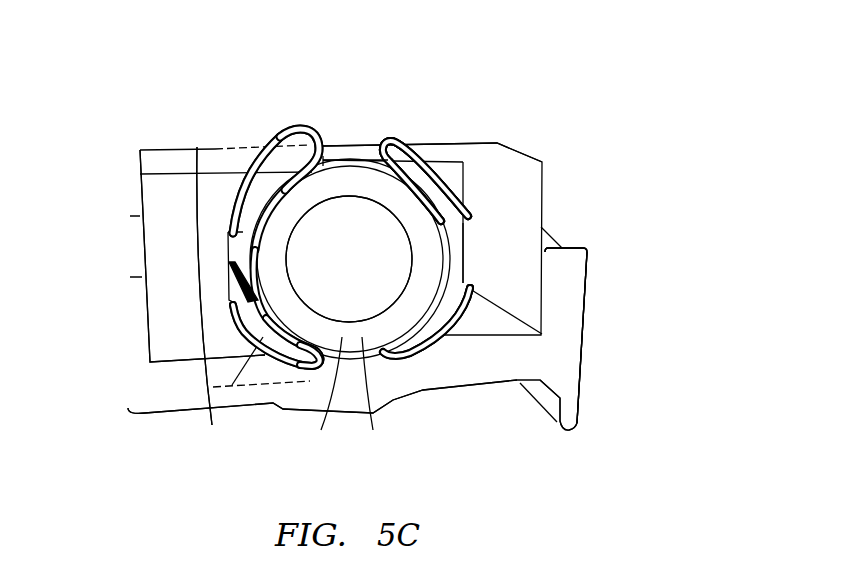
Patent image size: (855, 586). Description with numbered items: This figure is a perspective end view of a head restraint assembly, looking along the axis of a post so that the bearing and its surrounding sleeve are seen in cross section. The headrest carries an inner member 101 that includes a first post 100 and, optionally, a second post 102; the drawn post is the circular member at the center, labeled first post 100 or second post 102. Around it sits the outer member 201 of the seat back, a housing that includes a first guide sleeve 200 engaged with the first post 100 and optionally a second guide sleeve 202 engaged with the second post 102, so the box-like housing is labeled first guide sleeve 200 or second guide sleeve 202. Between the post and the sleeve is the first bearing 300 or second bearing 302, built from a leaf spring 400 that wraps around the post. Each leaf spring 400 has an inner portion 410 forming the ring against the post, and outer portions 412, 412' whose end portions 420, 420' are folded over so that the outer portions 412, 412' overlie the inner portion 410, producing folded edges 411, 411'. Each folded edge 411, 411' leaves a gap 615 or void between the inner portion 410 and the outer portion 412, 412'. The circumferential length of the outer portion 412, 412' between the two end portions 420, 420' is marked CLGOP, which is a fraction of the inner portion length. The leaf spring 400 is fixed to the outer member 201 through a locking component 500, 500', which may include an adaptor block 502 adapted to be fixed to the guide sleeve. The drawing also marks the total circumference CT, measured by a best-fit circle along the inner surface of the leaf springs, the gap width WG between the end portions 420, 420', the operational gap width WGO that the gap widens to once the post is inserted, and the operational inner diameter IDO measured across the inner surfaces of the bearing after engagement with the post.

The first post 100 is at (616, 404).
The inner member 101 is at (355, 402).
The second post 102 is at (374, 360).
The first guide sleeve 200 is at (563, 247).
The outer member 201 is at (585, 297).
The second guide sleeve 202 is at (563, 247).
The first bearing 300 is at (413, 140).
The second bearing 302 is at (413, 140).
The leaf spring 400 is at (441, 172).
The inner portion 410 is at (442, 247).
The folded edge 411 is at (288, 104).
The folded edge 411' is at (286, 408).
The outer portion 412 is at (351, 207).
The outer portion 412' is at (358, 323).
The end portion 420 is at (322, 208).
The end portion 420' is at (371, 376).
The locking component 500 is at (373, 252).
The locking component 500' is at (170, 250).
The adaptor block 502 is at (503, 143).
The gap 615 is at (427, 150).
The operational inner diameter IDO is at (302, 124).
The operational gap width WGO is at (348, 160).
The total circumference CT is at (420, 360).
The gap width WG is at (211, 307).
The circumferential length of the outer portion CLGOP is at (205, 322).